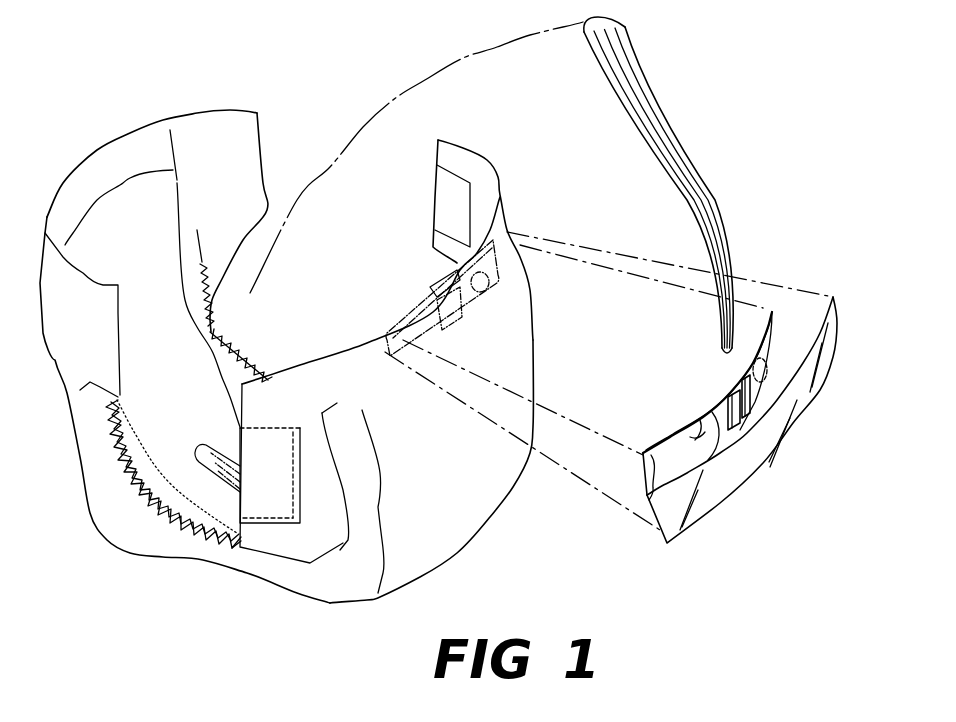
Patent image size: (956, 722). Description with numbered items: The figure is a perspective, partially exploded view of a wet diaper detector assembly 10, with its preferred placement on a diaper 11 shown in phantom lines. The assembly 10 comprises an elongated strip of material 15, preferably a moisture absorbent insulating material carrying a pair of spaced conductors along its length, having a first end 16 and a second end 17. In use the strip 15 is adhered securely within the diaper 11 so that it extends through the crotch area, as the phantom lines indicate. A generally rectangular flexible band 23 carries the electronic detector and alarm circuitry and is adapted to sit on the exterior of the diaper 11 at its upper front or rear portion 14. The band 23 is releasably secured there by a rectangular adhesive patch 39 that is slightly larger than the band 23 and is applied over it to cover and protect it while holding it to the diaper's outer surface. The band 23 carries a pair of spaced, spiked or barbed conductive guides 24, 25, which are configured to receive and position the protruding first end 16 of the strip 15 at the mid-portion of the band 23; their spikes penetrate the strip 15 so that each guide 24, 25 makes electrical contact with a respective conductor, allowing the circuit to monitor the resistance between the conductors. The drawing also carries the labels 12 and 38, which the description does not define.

The wet diaper detector assembly 10 is at (733, 382).
The diaper 11 is at (284, 348).
The side flap / ear strap portion 12 is at (86, 160).
The upper front or rear portion 14 is at (412, 284).
The elongated strip of material 15 is at (665, 201).
The first end 16 is at (723, 353).
The second end 17 is at (605, 20).
The flexible band 23 is at (659, 430).
The conductive guide 24 is at (731, 404).
The conductive guide 25 is at (745, 378).
The pocket 38 is at (184, 412).
The adhesive patch 39 is at (810, 420).